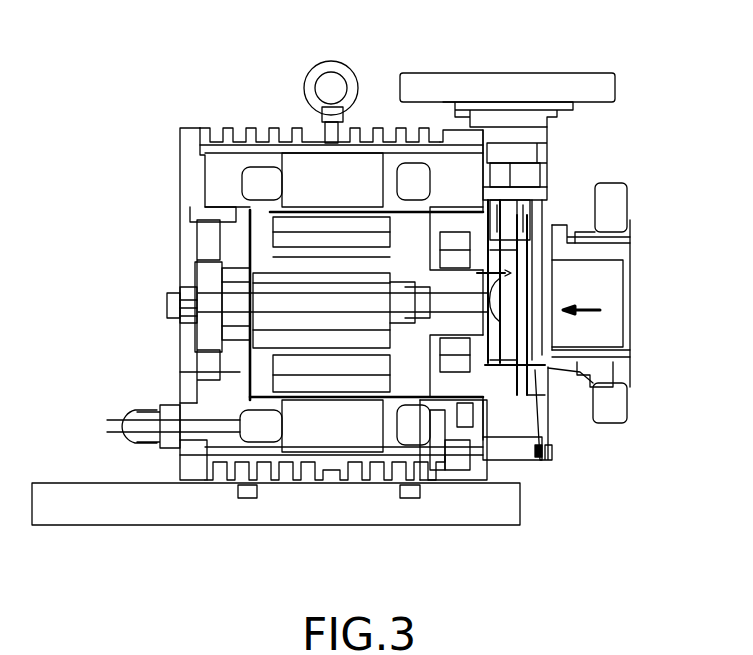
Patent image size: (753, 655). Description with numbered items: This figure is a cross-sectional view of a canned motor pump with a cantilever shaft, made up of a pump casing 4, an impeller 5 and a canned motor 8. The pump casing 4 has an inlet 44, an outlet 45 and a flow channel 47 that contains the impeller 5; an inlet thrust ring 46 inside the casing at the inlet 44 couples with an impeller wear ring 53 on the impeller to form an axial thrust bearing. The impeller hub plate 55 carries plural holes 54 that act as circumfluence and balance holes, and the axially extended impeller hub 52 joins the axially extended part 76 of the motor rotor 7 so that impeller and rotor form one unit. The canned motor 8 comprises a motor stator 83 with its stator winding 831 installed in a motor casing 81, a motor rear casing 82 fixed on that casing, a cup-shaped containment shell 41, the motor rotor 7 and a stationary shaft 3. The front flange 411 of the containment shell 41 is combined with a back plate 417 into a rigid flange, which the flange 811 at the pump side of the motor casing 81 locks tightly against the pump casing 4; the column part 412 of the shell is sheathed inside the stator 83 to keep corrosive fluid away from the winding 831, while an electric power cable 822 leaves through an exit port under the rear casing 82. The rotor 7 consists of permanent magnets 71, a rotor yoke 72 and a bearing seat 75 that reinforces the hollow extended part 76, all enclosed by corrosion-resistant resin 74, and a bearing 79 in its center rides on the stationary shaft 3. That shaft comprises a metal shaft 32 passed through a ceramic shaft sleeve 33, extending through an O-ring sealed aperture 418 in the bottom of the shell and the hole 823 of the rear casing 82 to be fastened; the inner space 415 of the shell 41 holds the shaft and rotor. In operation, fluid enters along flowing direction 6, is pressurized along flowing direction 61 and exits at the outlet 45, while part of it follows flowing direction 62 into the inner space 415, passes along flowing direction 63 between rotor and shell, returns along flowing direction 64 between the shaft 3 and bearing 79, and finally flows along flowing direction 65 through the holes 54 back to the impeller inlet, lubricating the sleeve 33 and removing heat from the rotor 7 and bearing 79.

The stationary shaft 3 is at (233, 298).
The pump casing 4 is at (535, 437).
The impeller 5 is at (552, 408).
The flowing direction 6 is at (607, 315).
The motor rotor 7 is at (373, 227).
The canned motor 8 is at (230, 130).
The metal shaft 32 is at (213, 308).
The ceramic shaft sleeve 33 is at (315, 325).
The containment shell 41 is at (247, 217).
The inlet 44 is at (635, 295).
The outlet 45 is at (572, 72).
The inlet thrust ring 46 is at (623, 218).
The flow channel 47 is at (523, 197).
The impeller hub 52 is at (577, 377).
The impeller wear ring 53 is at (603, 365).
The holes 54 is at (548, 337).
The impeller hub plate 55 is at (550, 287).
The flowing direction 61 is at (511, 195).
The flowing direction 62 is at (503, 200).
The flowing direction 63 is at (180, 372).
The flowing direction 64 is at (245, 281).
The flowing direction 65 is at (498, 330).
The permanent magnets 71 is at (300, 227).
The rotor yoke 72 is at (318, 177).
The corrosion-resistant resin 74 is at (458, 380).
The bearing seat 75 is at (412, 253).
The axially extended part 76 is at (475, 255).
The bearing 79 is at (347, 338).
The motor casing 81 is at (200, 127).
The motor rear casing 82 is at (193, 140).
The motor stator 83 is at (325, 245).
The flange 411 is at (435, 365).
The column part 412 is at (320, 400).
The inner space 415 is at (483, 437).
The back plate 417 is at (452, 468).
The aperture 418 is at (250, 272).
The flange 811 is at (434, 470).
The electric power cable 822 is at (107, 425).
The hole 823 is at (173, 325).
The stator winding 831 is at (248, 178).